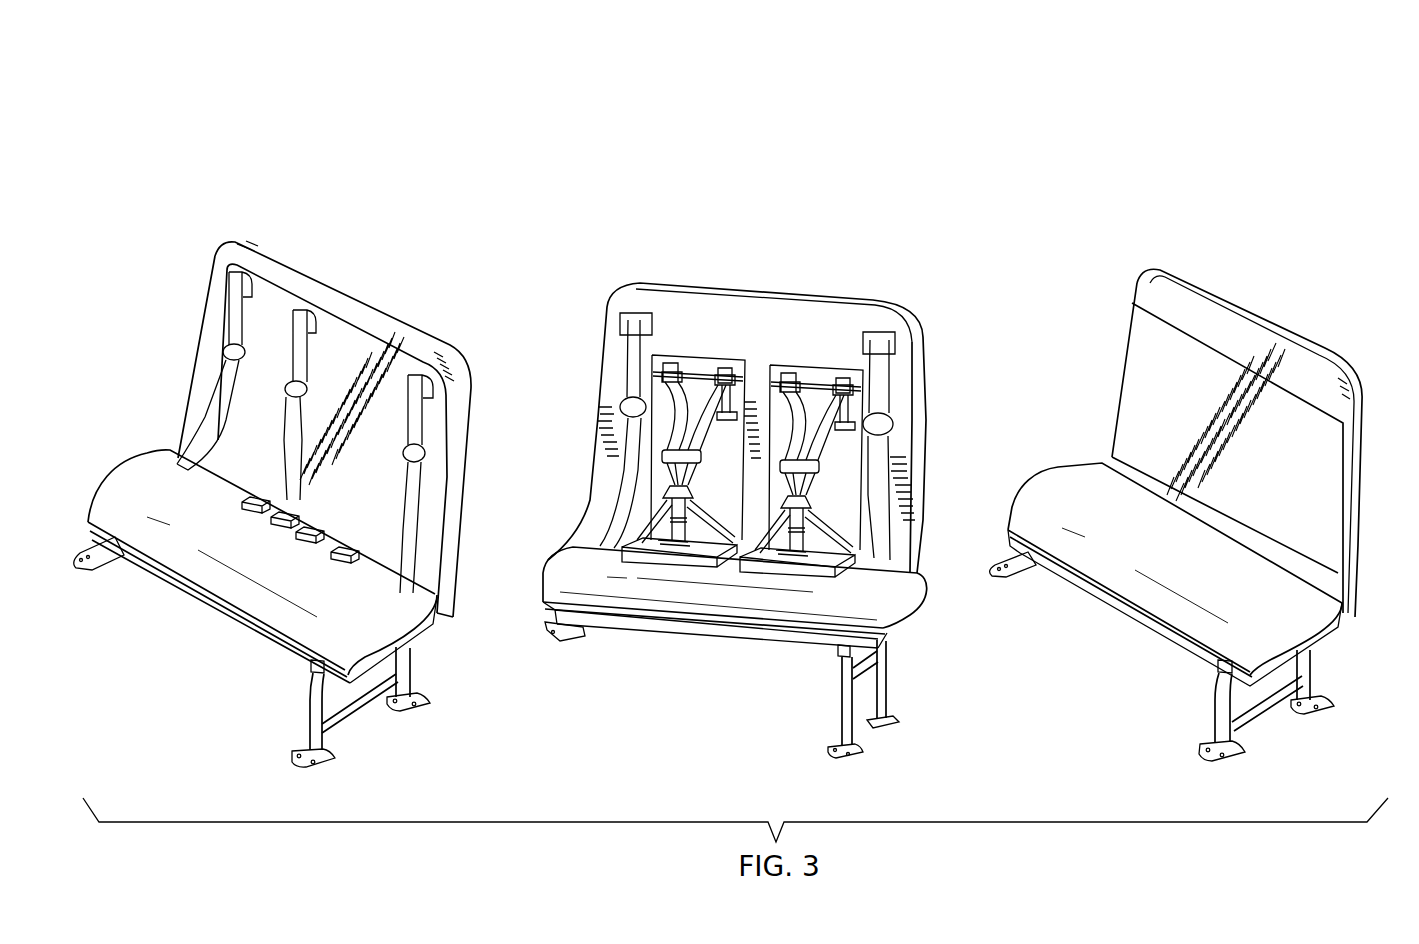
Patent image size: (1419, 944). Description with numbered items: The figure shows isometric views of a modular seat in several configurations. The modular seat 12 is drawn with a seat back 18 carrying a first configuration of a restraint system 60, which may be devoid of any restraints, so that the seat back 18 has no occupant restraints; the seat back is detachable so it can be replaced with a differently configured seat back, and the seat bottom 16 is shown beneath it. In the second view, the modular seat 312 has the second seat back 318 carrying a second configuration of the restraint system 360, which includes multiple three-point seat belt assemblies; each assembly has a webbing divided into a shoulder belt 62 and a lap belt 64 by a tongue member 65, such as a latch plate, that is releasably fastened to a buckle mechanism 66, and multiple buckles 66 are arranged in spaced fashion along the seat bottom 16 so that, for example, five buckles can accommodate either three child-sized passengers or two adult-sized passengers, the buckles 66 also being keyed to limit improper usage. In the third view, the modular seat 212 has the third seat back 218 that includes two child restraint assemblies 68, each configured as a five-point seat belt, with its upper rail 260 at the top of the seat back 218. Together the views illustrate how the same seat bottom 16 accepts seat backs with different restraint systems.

The modular seat 312 is at (203, 142).
The modular seat 212 is at (618, 142).
The modular seat 12 is at (1183, 205).
The second configuration of restraint system 360 is at (340, 252).
The second seat back 318 is at (420, 300).
The seat back top rail 260 is at (760, 255).
The third seat back 218 is at (948, 402).
The first configuration of restraint system 60 is at (1275, 282).
The seat back 18 is at (1376, 360).
The seat bottom 16 is at (77, 466).
The shoulder belt 62 is at (233, 310).
The lap belt 64 is at (205, 425).
The tongue member 65 is at (227, 350).
The buckle mechanism 66 is at (333, 557).
The child restraint assembly 68 is at (722, 362).